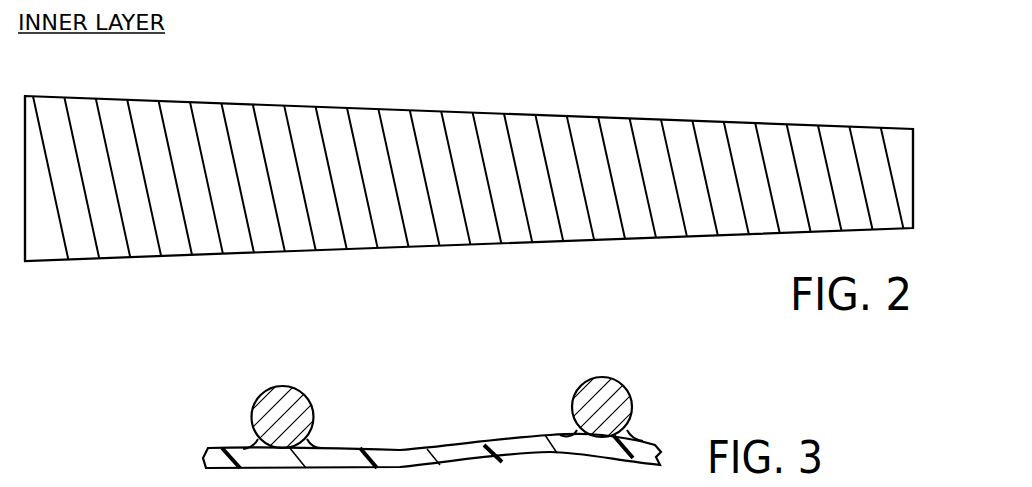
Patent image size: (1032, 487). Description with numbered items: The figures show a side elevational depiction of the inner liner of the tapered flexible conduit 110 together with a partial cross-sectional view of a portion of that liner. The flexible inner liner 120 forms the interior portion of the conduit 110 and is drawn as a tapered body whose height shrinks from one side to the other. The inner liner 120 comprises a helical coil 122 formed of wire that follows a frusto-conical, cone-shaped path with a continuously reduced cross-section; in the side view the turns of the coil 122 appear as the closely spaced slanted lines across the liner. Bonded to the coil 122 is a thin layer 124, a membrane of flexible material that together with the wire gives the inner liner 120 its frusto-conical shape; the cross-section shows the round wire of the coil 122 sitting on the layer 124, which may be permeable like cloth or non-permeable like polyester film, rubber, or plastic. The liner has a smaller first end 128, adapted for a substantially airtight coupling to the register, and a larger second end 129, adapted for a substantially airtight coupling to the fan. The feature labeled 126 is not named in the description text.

In FIG. 2, the tapered flexible conduit 110 is at (477, 189).
In FIG. 2, the inner liner 120 is at (477, 189).
In FIG. 3, the inner liner 120 is at (415, 405).
In FIG. 2, the helical coil 122 is at (574, 147).
In FIG. 3, the helical coil 122 is at (291, 391).
In FIG. 2, the layer 124 is at (741, 131).
In FIG. 3, the layer 124 is at (449, 452).
In FIG. 3, the fillet 126 is at (317, 446).
In FIG. 2, the first end 128 is at (914, 158).
In FIG. 2, the second end 129 is at (25, 262).